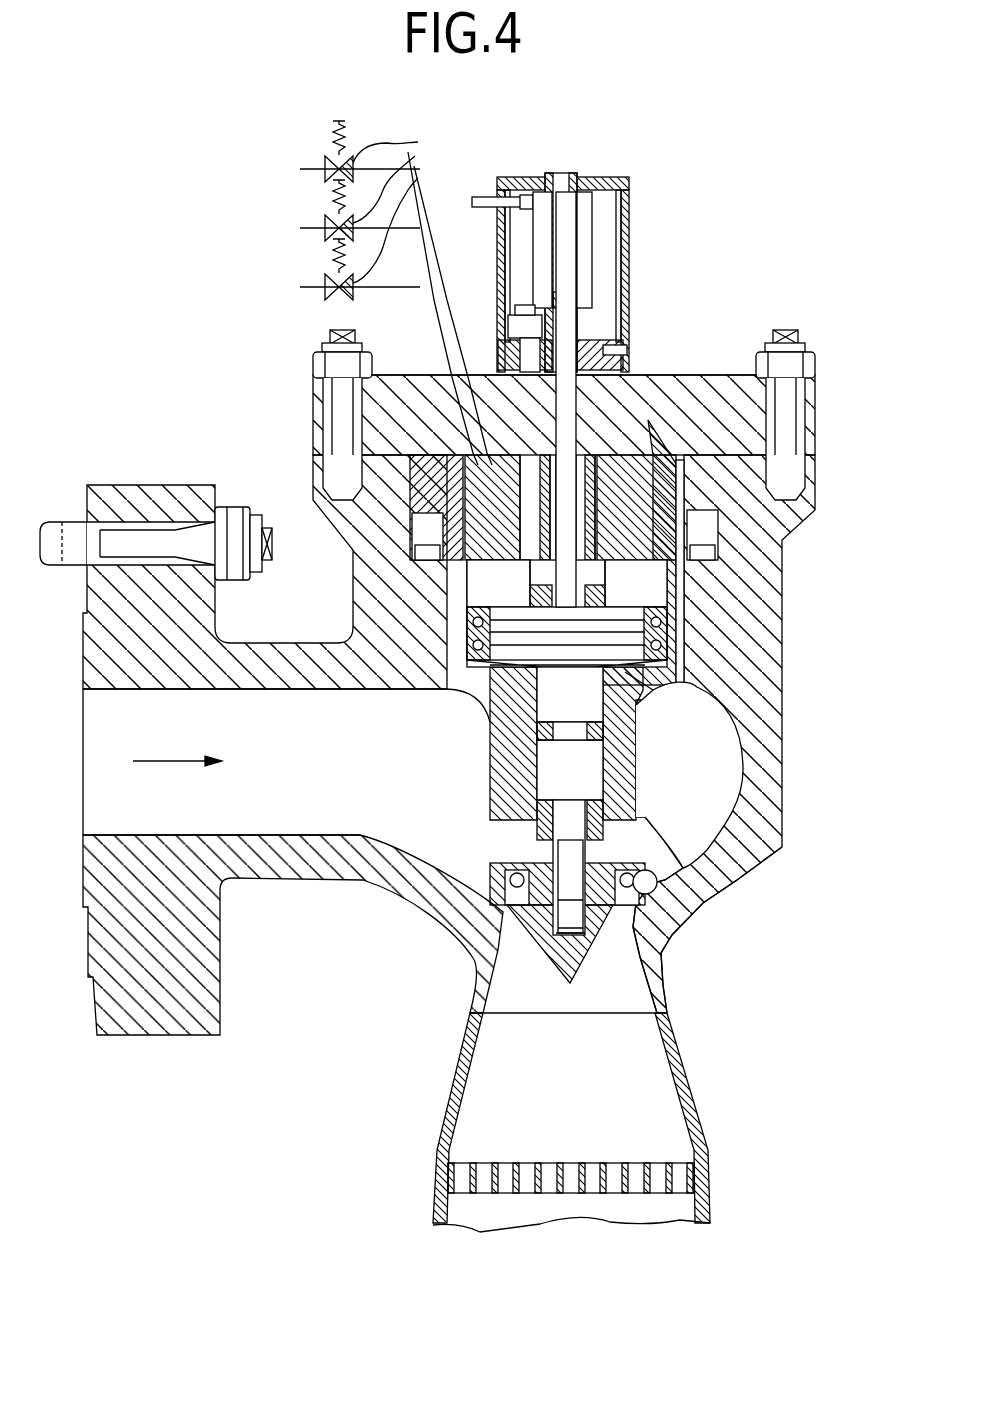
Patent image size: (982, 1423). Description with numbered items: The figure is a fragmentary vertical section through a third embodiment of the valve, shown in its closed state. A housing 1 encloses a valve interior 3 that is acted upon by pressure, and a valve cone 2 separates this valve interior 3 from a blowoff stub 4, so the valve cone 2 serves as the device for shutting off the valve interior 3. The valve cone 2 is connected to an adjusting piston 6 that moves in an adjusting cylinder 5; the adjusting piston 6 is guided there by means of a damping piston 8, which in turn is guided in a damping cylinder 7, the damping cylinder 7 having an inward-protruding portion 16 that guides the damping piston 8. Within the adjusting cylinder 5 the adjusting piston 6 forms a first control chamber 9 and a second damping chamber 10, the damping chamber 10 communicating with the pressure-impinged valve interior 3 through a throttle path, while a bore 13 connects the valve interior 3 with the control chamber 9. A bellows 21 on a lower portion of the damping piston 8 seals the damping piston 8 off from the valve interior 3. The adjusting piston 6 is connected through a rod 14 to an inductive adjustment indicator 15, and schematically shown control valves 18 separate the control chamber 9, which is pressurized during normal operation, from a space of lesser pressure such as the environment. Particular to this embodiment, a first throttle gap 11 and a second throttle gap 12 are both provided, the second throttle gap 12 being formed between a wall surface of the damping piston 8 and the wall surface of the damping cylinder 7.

The housing 1 is at (620, 810).
The valve cone 2 is at (650, 867).
The valve interior 3 is at (692, 733).
The blowoff stub 4 is at (607, 1063).
The adjusting cylinder 5 is at (680, 630).
The adjusting piston 6 is at (592, 655).
The damping cylinder 7 is at (603, 768).
The damping piston 8 is at (603, 735).
The control chamber 9 is at (637, 587).
The damping chamber 10 is at (480, 676).
The first throttle gap 11 is at (665, 843).
The second throttle gap 12 is at (522, 705).
The bore 13 is at (803, 522).
The rod 14 is at (574, 425).
The inductive adjustment indicator 15 is at (603, 255).
The inward-protruding portion 16 is at (508, 760).
The control valves 18 is at (396, 289).
The bellows 21 is at (640, 792).